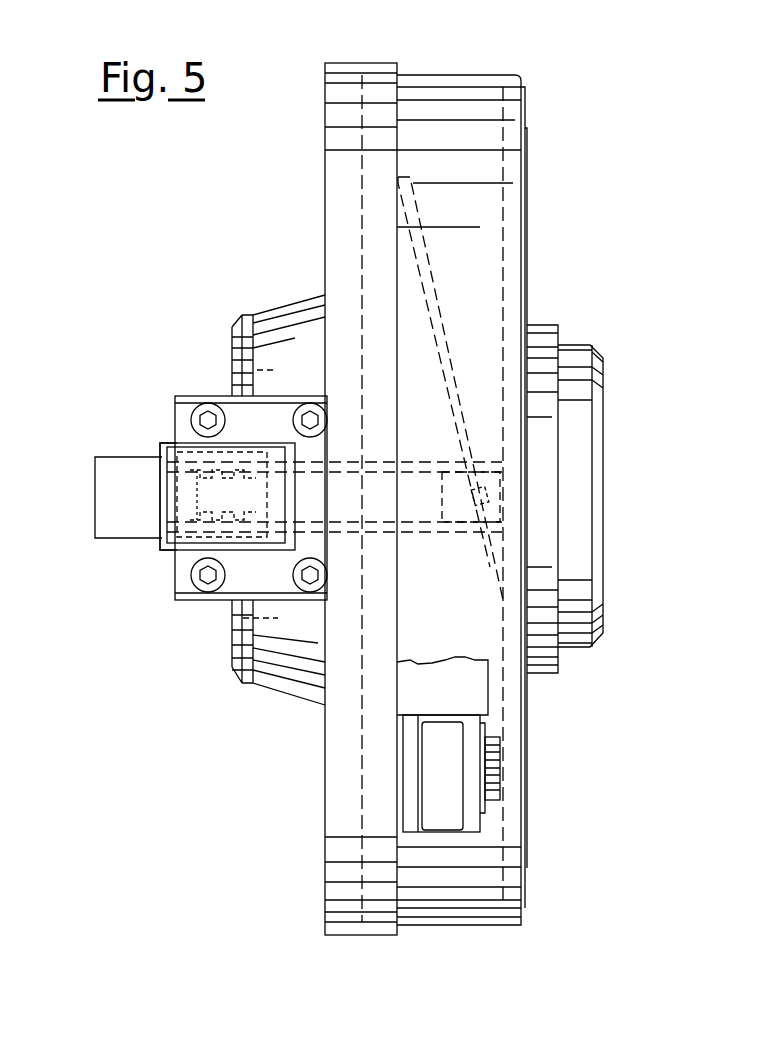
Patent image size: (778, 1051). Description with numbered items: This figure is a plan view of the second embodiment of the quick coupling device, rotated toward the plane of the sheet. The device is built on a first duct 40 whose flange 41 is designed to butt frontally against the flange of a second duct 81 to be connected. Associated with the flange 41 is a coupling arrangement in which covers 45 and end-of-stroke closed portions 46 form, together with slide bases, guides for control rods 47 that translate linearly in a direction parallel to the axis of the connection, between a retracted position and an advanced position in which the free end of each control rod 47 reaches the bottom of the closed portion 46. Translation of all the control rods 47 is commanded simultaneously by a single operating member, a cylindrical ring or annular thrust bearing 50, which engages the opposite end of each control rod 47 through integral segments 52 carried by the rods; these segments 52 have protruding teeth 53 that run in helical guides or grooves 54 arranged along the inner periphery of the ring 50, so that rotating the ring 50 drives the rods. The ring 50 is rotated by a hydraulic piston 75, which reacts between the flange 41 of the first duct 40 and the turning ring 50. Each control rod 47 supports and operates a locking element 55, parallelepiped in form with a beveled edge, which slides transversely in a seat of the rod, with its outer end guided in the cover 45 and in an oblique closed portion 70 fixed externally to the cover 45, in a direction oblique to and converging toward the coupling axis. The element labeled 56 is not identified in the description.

The first duct 40 is at (585, 409).
The flange 41 is at (362, 207).
The cover 45 is at (183, 410).
The end-of-stroke closed portion 46 is at (110, 457).
The control rod 47 is at (497, 470).
The annular thrust bearing 50 is at (508, 74).
The integral segment 52 is at (443, 500).
The protruding tooth 53 is at (478, 506).
The helical guide 54 is at (451, 343).
The locking element 55 is at (197, 505).
The switch 56 is at (230, 457).
The oblique closed portion 70 is at (160, 478).
The hydraulic piston 75 is at (474, 688).
The second duct 81 is at (288, 697).